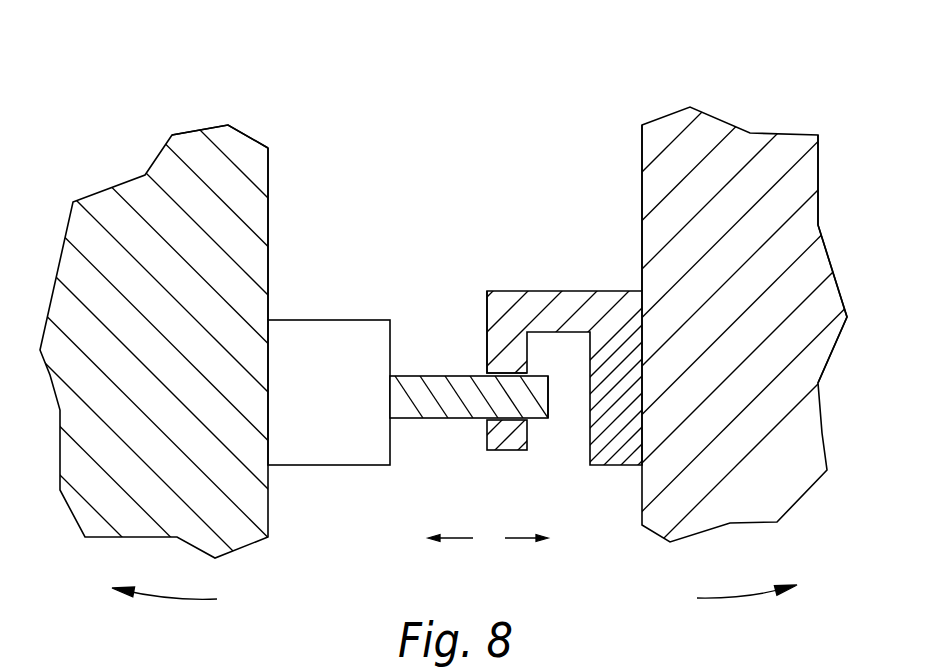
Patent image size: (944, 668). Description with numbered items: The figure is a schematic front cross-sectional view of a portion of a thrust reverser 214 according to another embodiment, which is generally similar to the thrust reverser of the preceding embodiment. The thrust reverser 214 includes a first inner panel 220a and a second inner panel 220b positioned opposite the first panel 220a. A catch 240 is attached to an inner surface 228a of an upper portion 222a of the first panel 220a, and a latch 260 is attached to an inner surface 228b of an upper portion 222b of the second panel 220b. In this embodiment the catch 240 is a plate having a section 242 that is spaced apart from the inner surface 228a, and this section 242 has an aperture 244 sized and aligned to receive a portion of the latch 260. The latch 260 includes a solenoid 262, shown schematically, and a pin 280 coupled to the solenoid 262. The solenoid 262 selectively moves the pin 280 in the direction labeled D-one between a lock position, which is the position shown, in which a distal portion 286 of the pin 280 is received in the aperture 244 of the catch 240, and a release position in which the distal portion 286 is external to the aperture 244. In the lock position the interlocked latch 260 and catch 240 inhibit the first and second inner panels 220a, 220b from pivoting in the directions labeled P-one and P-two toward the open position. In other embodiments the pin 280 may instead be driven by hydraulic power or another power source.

The thrust reverser 214 is at (683, 55).
The first inner panel 220a is at (727, 145).
The second inner panel 220b is at (118, 208).
The upper portion of the first panel 222a is at (785, 262).
The upper portion of the second panel 222b is at (240, 160).
The inner surface of the first panel 228a is at (641, 185).
The inner surface of the second panel 228b is at (268, 232).
The catch 240 is at (553, 289).
The section of the catch plate 242 is at (498, 342).
The aperture 244 is at (528, 420).
The latch 260 is at (392, 502).
The solenoid 262 is at (305, 320).
The pin 280 is at (435, 422).
The distal portion of the pin 286 is at (543, 400).